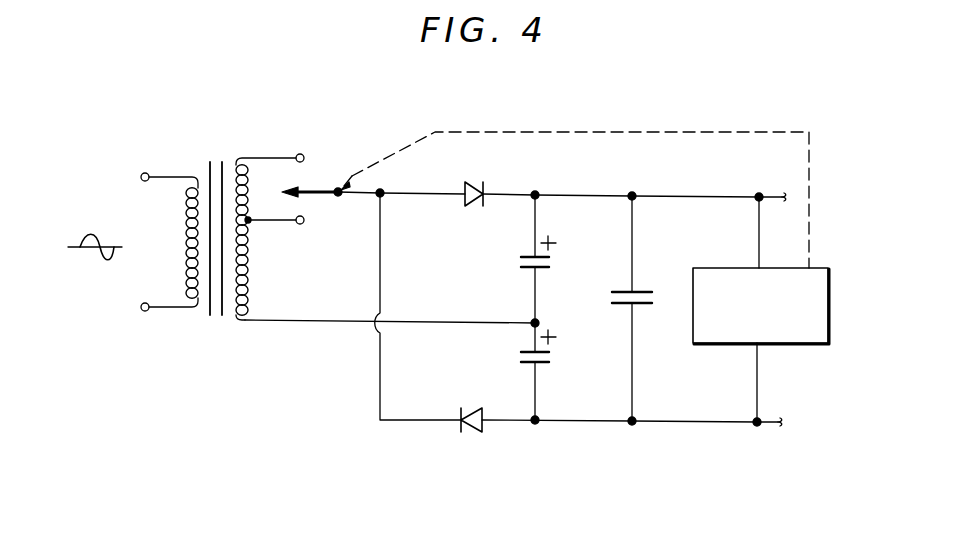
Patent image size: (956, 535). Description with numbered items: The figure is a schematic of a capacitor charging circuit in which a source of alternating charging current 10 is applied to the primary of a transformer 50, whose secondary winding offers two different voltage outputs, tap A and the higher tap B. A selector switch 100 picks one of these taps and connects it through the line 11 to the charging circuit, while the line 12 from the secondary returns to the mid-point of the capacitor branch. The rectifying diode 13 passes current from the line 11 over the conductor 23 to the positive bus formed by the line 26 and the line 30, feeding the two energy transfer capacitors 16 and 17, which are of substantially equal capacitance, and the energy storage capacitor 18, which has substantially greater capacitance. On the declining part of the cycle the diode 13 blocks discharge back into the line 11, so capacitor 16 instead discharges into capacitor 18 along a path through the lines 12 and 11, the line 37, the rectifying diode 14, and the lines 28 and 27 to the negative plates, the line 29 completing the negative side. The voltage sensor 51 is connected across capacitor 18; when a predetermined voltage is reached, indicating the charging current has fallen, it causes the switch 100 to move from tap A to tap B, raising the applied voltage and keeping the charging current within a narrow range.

The source of alternating charging current 10 is at (95, 262).
The transformer 50 is at (215, 318).
The selector switch 100 is at (315, 190).
The line 11 is at (360, 195).
The rectifying diode 13 is at (478, 181).
The conductor 23 is at (513, 193).
The line 26 is at (610, 178).
The output conductor 30 is at (710, 180).
The energy transfer capacitor 16 is at (550, 264).
The energy transfer capacitor 17 is at (550, 360).
The energy storage capacitor 18 is at (653, 294).
The line 12 is at (459, 322).
The line 27 is at (632, 380).
The line 37 is at (402, 420).
The rectifying diode 14 is at (470, 432).
The line 28 is at (572, 423).
The output conductor 29 is at (700, 424).
The voltage sensor 51 is at (830, 268).